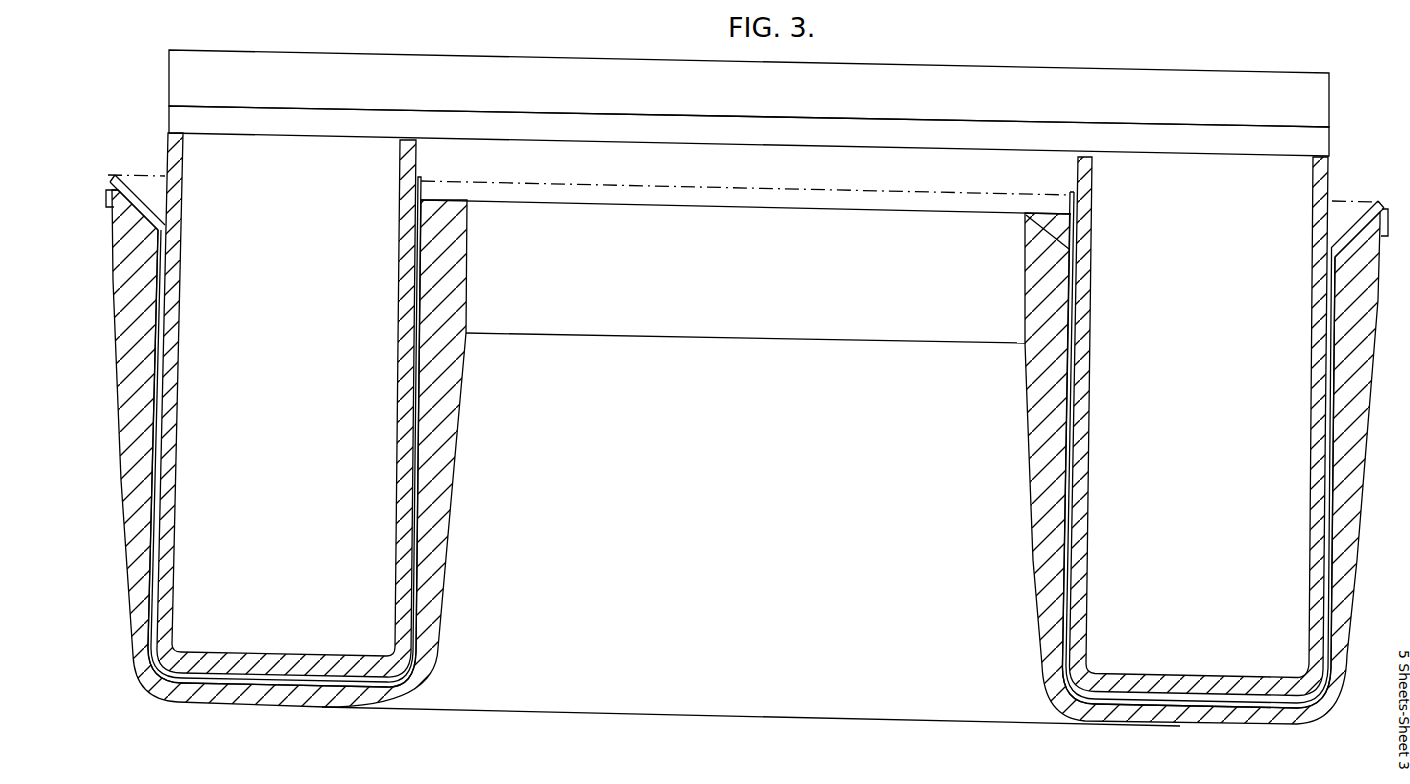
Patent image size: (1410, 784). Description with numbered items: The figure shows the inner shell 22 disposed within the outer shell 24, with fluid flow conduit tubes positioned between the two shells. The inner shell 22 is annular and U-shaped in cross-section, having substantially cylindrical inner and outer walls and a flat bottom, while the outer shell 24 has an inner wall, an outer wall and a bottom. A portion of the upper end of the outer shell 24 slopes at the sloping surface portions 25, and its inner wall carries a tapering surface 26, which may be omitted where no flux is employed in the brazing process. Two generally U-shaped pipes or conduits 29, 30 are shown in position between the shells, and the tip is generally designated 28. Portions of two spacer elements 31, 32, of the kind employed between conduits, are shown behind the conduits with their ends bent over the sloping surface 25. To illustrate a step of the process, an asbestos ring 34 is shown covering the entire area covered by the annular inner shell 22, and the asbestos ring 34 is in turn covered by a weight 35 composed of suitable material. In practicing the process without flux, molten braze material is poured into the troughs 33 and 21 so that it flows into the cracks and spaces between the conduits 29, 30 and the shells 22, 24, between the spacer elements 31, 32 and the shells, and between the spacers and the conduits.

The trough 21 is at (438, 198).
The inner shell 22 is at (403, 368).
The outer shell 24 is at (473, 385).
The sloping surface portion 25 is at (113, 262).
The tapering surface 26 is at (449, 212).
The tip 28 is at (456, 628).
The conduit 29 is at (410, 655).
The conduit 30 is at (1060, 667).
The spacer element 31 is at (106, 203).
The spacer element 32 is at (1386, 238).
The trough 33 is at (140, 183).
The asbestos ring 34 is at (177, 119).
The weight 35 is at (177, 91).